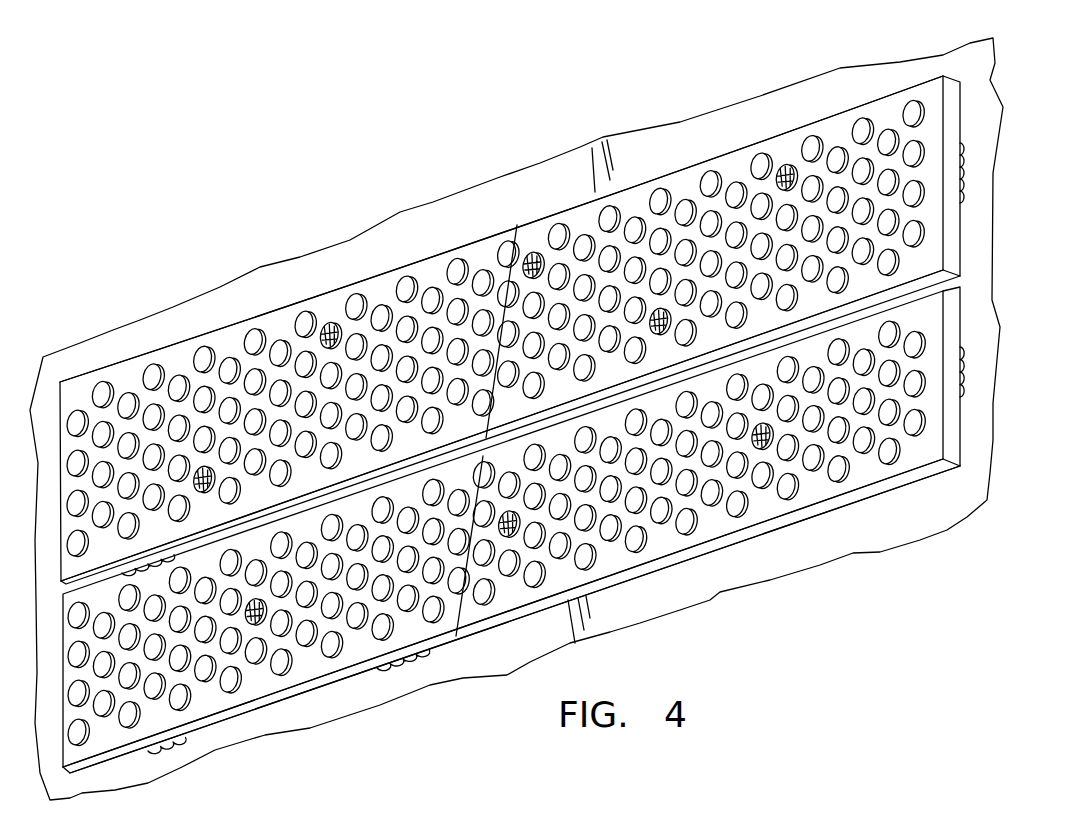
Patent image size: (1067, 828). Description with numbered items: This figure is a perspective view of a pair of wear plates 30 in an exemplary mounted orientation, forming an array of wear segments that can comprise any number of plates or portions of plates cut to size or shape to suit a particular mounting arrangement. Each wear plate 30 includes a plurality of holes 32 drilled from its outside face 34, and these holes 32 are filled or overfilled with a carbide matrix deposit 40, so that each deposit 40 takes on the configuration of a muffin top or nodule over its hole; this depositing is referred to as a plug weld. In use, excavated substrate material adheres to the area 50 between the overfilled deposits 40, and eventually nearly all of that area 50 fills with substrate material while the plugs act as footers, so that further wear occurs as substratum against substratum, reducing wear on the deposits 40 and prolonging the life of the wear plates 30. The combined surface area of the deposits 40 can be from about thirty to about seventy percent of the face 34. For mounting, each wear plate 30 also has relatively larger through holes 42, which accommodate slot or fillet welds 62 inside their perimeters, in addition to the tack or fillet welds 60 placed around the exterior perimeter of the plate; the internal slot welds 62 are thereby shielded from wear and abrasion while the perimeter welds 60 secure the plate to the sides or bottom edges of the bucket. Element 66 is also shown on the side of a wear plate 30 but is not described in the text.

The wear plate 30 is at (773, 132).
The holes 32 is at (732, 508).
The outside face 34 is at (733, 170).
The carbide matrix deposit 40 is at (248, 343).
The through holes 42 is at (330, 330).
The area between deposits 50 is at (870, 153).
The tack or fillet welds 60 is at (965, 170).
The slot or fillet welds 62 is at (528, 258).
The side protrusions 66 is at (965, 372).